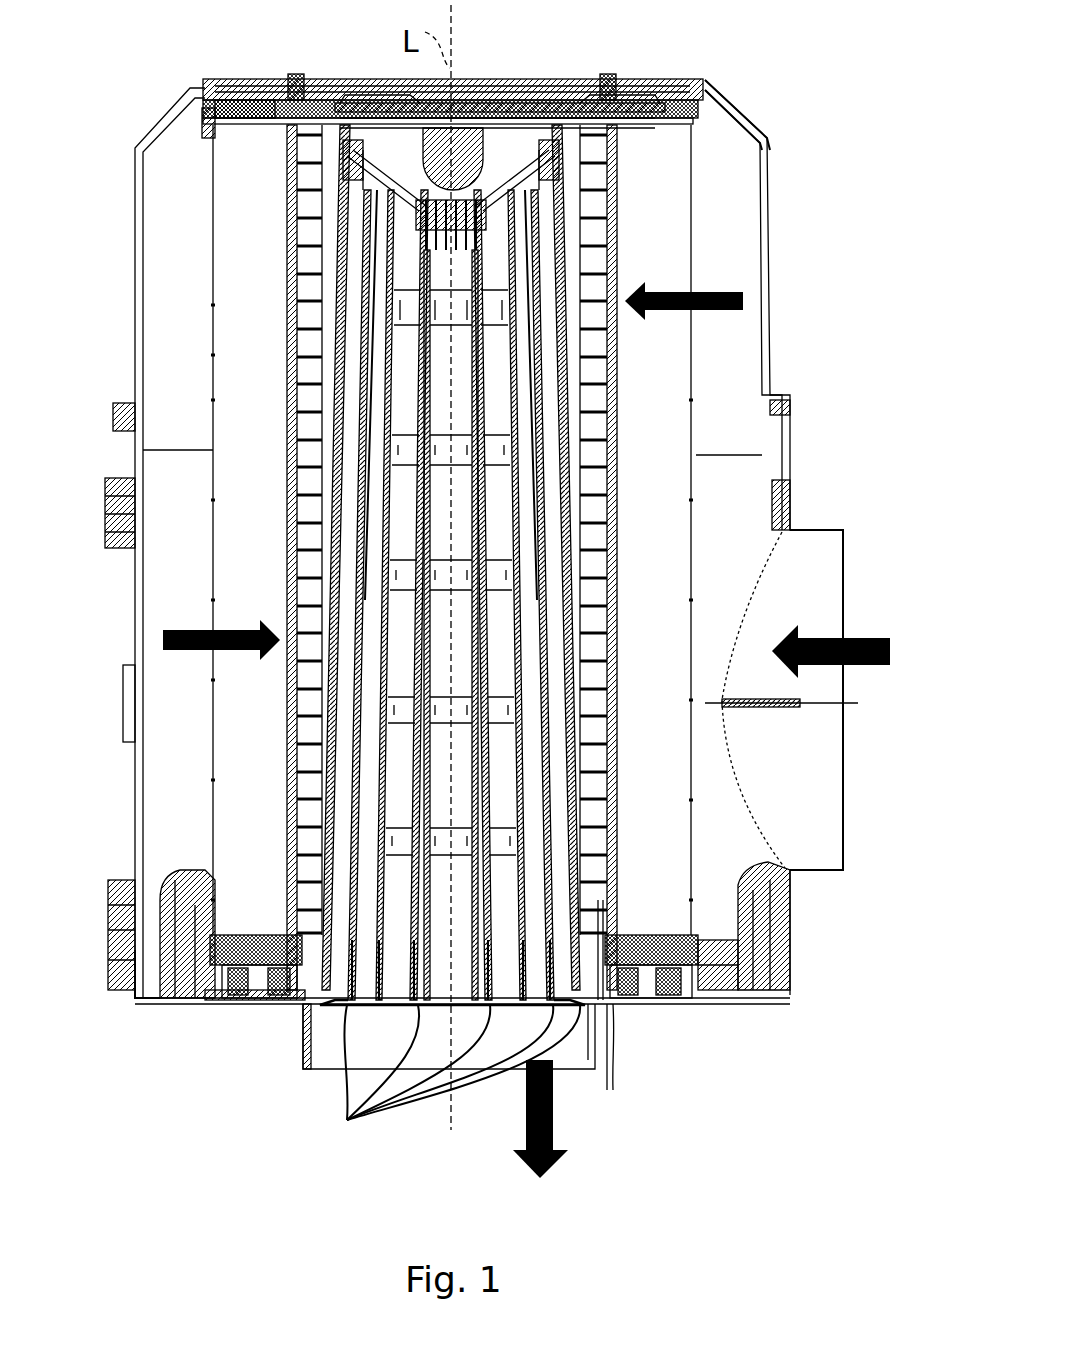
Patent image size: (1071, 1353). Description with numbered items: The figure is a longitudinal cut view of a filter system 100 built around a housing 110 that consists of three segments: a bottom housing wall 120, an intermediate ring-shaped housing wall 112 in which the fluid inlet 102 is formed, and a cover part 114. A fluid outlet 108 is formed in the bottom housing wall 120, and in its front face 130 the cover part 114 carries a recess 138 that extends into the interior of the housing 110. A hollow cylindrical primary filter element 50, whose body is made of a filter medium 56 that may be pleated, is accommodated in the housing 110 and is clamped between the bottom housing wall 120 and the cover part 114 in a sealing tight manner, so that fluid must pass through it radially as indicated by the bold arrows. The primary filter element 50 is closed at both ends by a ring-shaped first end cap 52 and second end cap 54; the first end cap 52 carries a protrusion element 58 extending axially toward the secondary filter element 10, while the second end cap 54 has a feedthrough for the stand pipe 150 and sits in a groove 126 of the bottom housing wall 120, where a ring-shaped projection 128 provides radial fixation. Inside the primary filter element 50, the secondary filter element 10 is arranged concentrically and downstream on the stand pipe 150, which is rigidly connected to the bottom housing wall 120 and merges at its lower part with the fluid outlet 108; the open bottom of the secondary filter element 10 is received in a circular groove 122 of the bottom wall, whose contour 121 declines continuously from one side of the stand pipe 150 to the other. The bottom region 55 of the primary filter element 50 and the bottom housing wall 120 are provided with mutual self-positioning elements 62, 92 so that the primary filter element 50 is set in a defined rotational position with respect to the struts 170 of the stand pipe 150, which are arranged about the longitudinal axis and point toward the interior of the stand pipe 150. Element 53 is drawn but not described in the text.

The secondary filter element 10 is at (315, 421).
The primary filter element 50 is at (211, 300).
The first end cap 52 is at (248, 120).
The raw side chamber 53 is at (192, 172).
The second end cap 54 is at (260, 935).
The bottom region 55 is at (246, 1012).
The filter medium 56 is at (681, 397).
The protrusion element 58 is at (437, 147).
The self-positioning element 62 is at (698, 925).
The self-positioning element 92 is at (197, 885).
The filter system 100 is at (790, 300).
The fluid inlet 102 is at (836, 528).
The fluid outlet 108 is at (300, 1062).
The housing 110 is at (496, 562).
The housing wall 112 is at (792, 497).
The cover part 114 is at (756, 114).
The bottom housing wall 120 is at (148, 1004).
The contour 121 is at (400, 895).
The circular groove 122 is at (608, 1012).
The groove 126 is at (648, 1012).
The ring shaped projection 128 is at (645, 985).
The front face 130 is at (245, 79).
The recess 138 is at (470, 104).
The stand pipe 150 is at (352, 490).
The struts 170 is at (456, 1088).